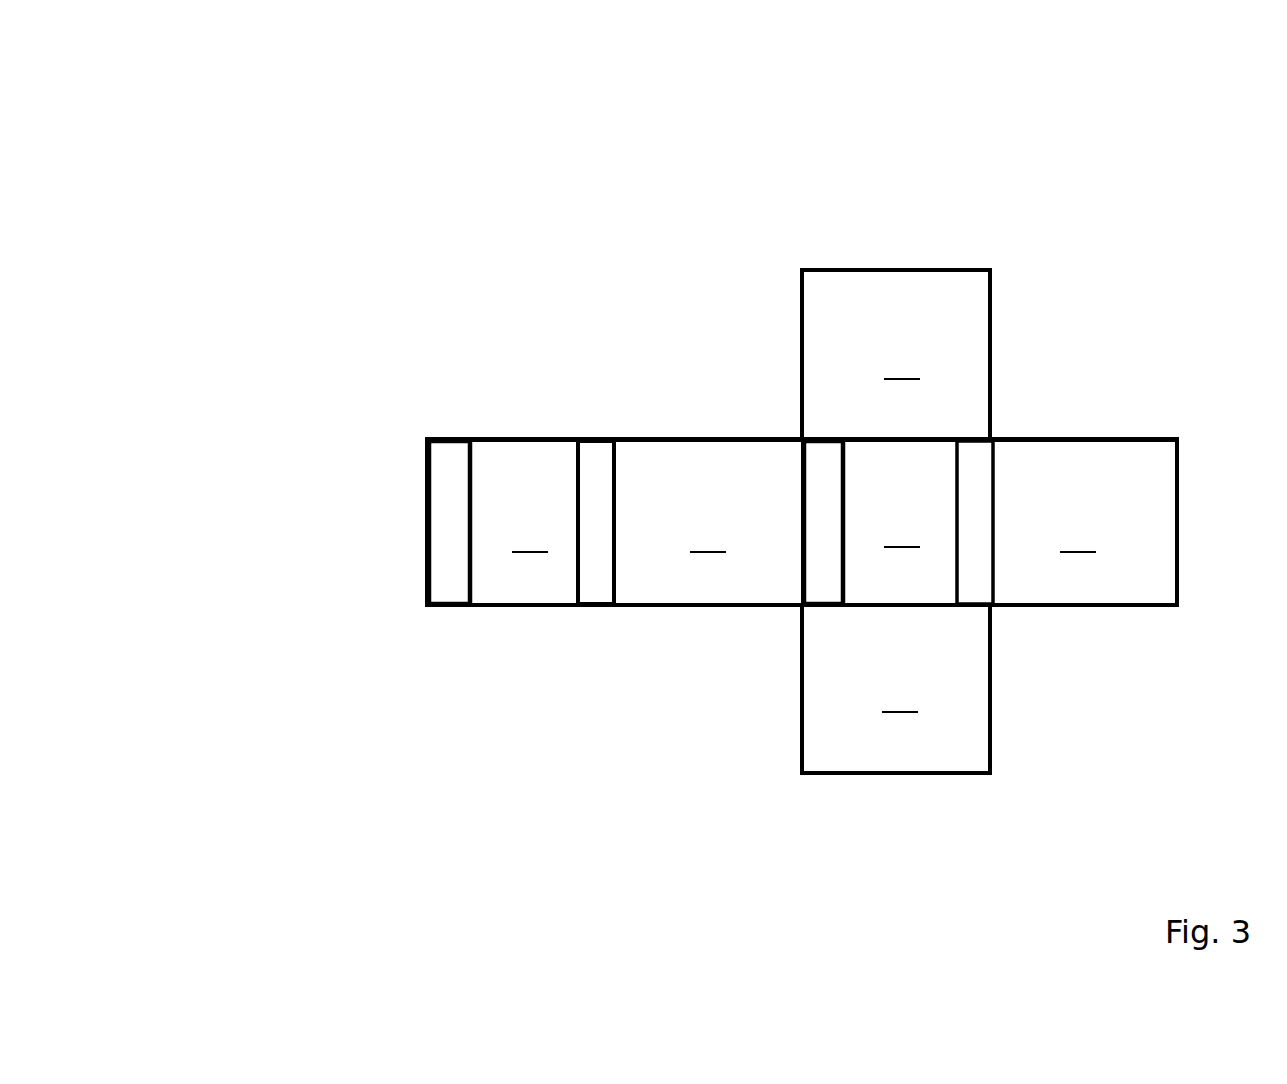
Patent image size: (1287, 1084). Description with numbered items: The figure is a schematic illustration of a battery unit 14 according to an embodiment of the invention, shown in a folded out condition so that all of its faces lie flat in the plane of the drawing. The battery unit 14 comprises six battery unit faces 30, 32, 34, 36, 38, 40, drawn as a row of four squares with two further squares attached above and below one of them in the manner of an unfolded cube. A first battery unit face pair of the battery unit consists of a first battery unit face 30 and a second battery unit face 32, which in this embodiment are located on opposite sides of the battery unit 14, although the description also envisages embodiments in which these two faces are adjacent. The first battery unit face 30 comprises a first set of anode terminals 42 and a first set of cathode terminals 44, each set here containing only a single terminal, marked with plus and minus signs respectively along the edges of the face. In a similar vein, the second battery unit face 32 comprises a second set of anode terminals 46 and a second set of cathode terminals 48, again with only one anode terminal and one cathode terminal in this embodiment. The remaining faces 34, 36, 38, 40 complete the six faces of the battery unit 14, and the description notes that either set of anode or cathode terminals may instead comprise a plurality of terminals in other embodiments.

The battery unit 14 is at (500, 221).
The first battery unit face 30 is at (900, 522).
The second battery unit face 32 is at (523, 522).
The battery unit face 34 is at (896, 355).
The battery unit face 36 is at (896, 689).
The battery unit face 38 is at (708, 522).
The battery unit face 40 is at (1085, 522).
The first set of anode terminals 42 is at (991, 465).
The first set of cathode terminals 44 is at (821, 455).
The second set of anode terminals 46 is at (595, 454).
The second set of cathode terminals 48 is at (440, 484).